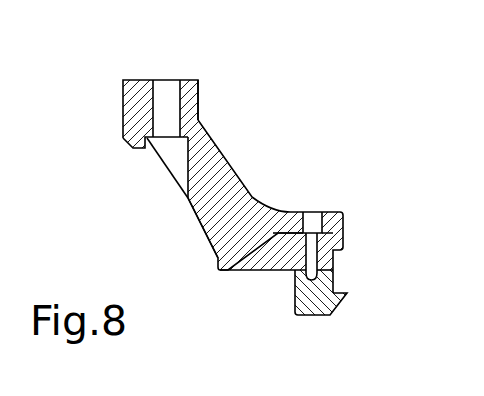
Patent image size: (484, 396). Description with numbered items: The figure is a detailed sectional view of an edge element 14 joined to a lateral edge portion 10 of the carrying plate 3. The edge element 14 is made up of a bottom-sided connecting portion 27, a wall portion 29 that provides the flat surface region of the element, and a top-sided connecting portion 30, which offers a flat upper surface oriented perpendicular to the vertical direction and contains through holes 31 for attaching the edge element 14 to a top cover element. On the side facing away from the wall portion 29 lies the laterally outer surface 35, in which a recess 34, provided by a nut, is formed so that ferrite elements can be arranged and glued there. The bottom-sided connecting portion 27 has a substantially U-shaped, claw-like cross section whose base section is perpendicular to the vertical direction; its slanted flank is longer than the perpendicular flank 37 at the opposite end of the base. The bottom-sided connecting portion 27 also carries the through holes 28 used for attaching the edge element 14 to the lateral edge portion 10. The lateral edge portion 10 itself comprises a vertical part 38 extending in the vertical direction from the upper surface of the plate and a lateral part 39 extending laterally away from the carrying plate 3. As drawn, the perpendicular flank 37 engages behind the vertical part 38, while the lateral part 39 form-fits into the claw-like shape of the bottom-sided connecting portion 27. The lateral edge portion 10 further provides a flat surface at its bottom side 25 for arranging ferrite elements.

The carrying plate 3 is at (331, 312).
The lateral edge portion 10 is at (247, 272).
The edge element 14 is at (199, 97).
The bottom side 25 is at (258, 272).
The bottom-sided connecting portion 27 is at (290, 210).
The through holes 28 is at (313, 215).
The wall portion 29 is at (225, 152).
The top-sided connecting portion 30 is at (133, 88).
The through holes 31 is at (172, 93).
The recess 34 is at (152, 146).
The laterally outer surface 35 is at (202, 221).
The perpendicular flank 37 is at (341, 238).
The vertical part 38 is at (329, 277).
The lateral part 39 is at (273, 233).